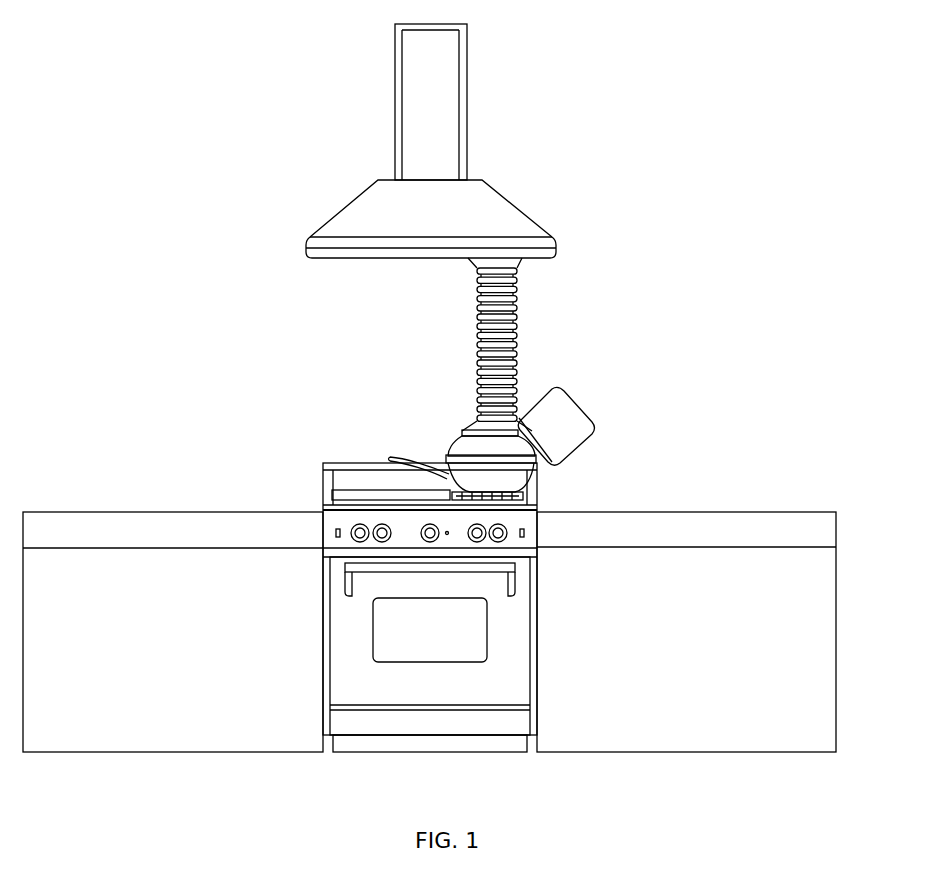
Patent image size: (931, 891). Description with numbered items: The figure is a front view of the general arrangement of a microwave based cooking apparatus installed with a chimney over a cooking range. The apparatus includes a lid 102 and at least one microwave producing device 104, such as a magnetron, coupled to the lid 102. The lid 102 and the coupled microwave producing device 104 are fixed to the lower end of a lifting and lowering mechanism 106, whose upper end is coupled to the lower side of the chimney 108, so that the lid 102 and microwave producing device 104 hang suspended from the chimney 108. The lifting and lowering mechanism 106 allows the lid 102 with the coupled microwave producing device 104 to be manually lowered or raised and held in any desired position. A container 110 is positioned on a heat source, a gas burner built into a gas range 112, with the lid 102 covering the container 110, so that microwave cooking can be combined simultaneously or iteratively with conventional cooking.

The lid 102 is at (457, 447).
The microwave producing device 104 is at (594, 428).
The lifting and lowering mechanism 106 is at (518, 355).
The chimney 108 is at (495, 200).
The container 110 is at (390, 458).
The gas range 112 is at (322, 512).